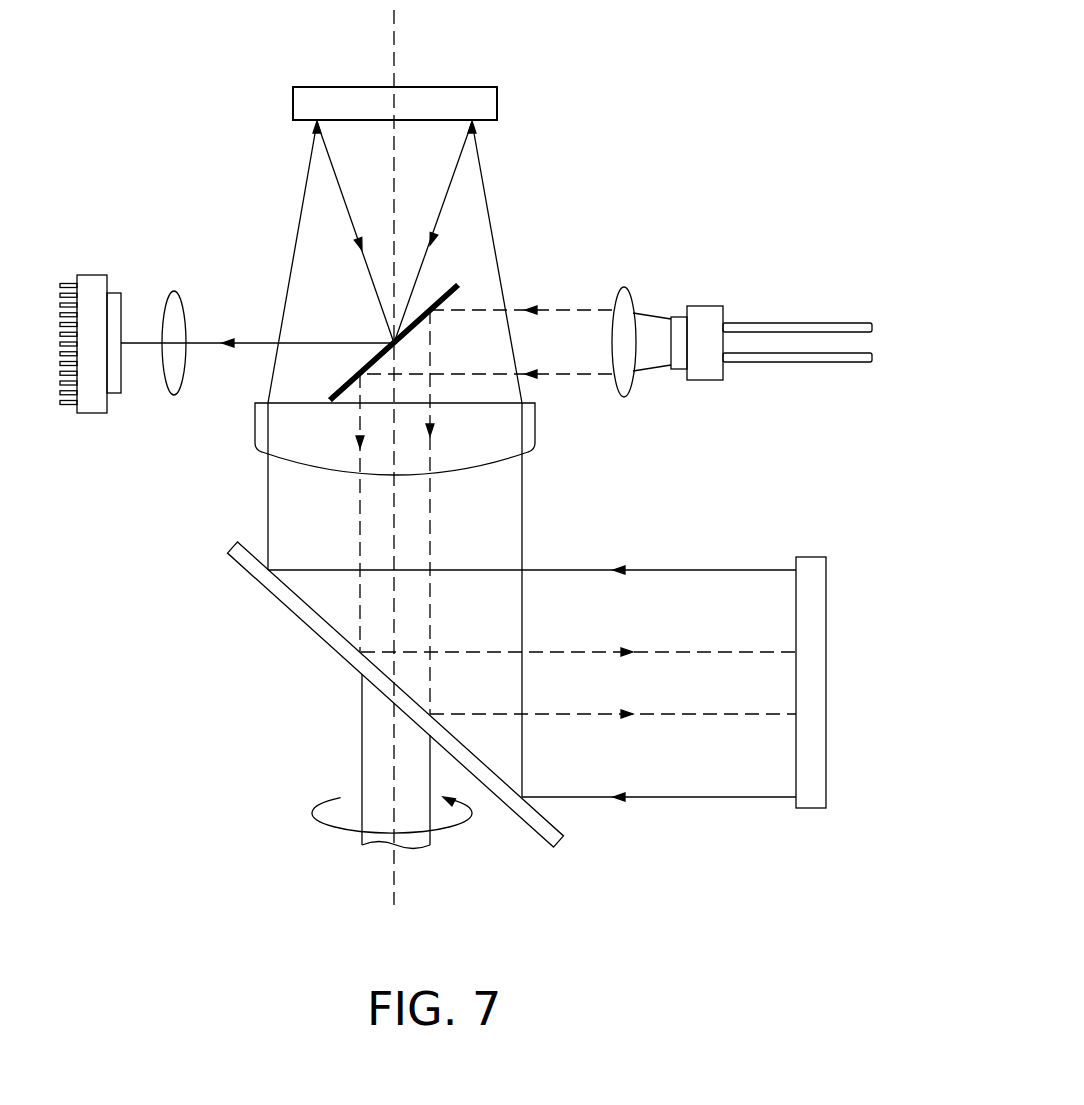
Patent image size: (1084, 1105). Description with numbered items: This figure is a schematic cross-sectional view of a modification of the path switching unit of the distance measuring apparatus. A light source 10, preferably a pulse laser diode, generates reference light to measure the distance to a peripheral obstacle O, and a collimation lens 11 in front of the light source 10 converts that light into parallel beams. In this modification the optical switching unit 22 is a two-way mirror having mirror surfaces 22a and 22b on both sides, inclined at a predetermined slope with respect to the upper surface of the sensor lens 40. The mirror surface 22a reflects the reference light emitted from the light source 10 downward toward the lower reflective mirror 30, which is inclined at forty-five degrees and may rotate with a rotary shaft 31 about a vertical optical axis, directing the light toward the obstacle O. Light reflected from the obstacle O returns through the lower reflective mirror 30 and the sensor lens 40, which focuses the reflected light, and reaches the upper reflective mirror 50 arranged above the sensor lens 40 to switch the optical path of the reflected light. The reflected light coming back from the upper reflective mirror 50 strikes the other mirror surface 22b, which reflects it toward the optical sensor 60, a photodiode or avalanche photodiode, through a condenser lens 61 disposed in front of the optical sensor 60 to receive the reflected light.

The light source 10 is at (702, 313).
The collimation lens 11 is at (625, 298).
The optical switching unit 22 is at (555, 173).
The mirror surface 22a is at (432, 314).
The mirror surface 22b is at (450, 288).
The lower reflective mirror 30 is at (253, 575).
The rotary shaft 31 is at (368, 727).
The sensor lens 40 is at (528, 430).
The upper reflective mirror 50 is at (465, 93).
The optical sensor 60 is at (95, 274).
The condenser lens 61 is at (173, 292).
The peripheral obstacle O is at (812, 797).